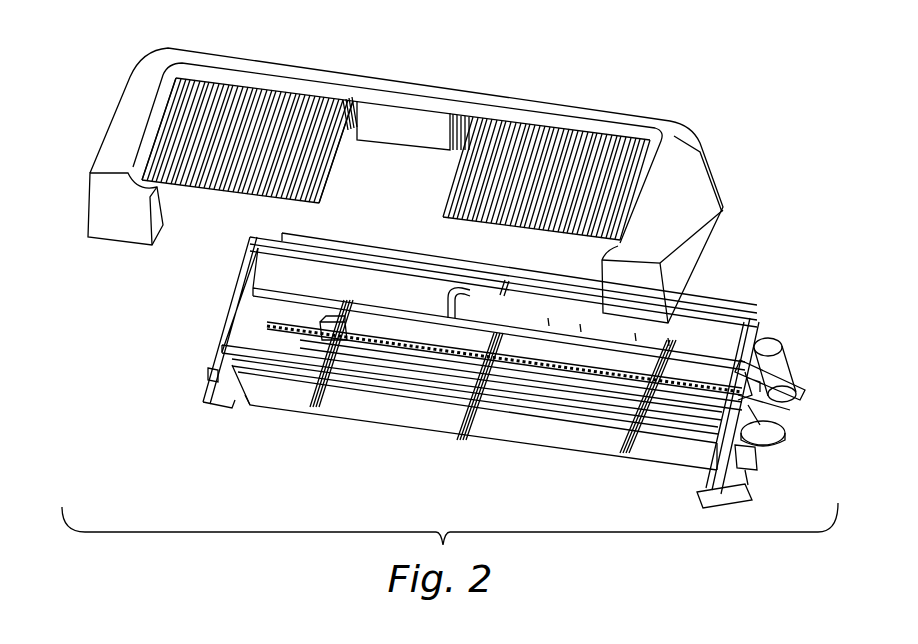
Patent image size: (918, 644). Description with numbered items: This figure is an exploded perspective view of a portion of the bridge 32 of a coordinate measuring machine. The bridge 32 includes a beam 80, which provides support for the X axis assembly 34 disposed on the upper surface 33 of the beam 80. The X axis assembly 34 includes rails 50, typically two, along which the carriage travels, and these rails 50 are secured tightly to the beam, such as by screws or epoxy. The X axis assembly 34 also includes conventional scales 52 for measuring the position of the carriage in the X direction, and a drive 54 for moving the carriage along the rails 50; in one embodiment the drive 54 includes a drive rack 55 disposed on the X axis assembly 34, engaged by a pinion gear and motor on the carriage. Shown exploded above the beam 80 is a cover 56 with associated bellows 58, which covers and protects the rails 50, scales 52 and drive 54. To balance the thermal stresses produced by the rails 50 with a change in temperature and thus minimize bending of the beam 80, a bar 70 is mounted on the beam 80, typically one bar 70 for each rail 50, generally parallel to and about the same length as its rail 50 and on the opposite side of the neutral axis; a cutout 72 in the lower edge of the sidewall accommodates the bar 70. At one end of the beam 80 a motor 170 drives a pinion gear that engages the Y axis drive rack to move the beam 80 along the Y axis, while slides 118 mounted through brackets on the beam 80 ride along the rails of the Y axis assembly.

The bridge 32 is at (405, 172).
The upper surface 33 is at (272, 325).
The X axis assembly 34 is at (504, 363).
The rail 50 is at (398, 367).
The scales 52 is at (583, 360).
The drive 54 is at (447, 388).
The drive rack 55 is at (527, 380).
The cover 56 is at (402, 86).
The bellows 58 is at (289, 103).
The bar 70 is at (613, 454).
The cutout 72 is at (276, 406).
The beam 80 is at (347, 403).
The slide 118 is at (746, 478).
The motor 170 is at (779, 344).